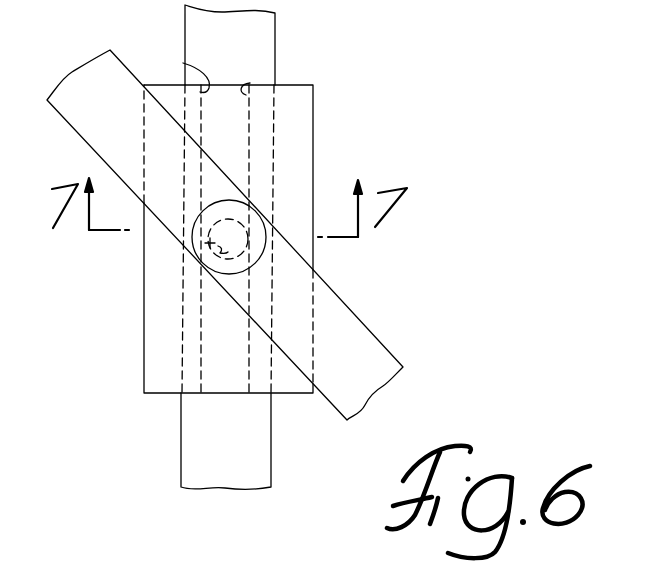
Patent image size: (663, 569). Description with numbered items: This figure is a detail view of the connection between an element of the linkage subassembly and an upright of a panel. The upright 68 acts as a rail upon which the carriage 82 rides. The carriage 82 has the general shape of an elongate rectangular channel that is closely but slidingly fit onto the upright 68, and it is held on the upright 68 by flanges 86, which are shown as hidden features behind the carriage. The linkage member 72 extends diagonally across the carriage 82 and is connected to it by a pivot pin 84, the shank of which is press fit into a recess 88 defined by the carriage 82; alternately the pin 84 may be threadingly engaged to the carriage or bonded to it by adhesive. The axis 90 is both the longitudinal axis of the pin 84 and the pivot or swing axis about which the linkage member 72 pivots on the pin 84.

The upright 68 is at (258, 457).
The linkage member 72 is at (340, 322).
The carriage 82 is at (314, 124).
The pivot pin 84 is at (235, 272).
The flanges 86 is at (184, 64).
The recess 88 is at (205, 245).
The axis 90 is at (194, 561).